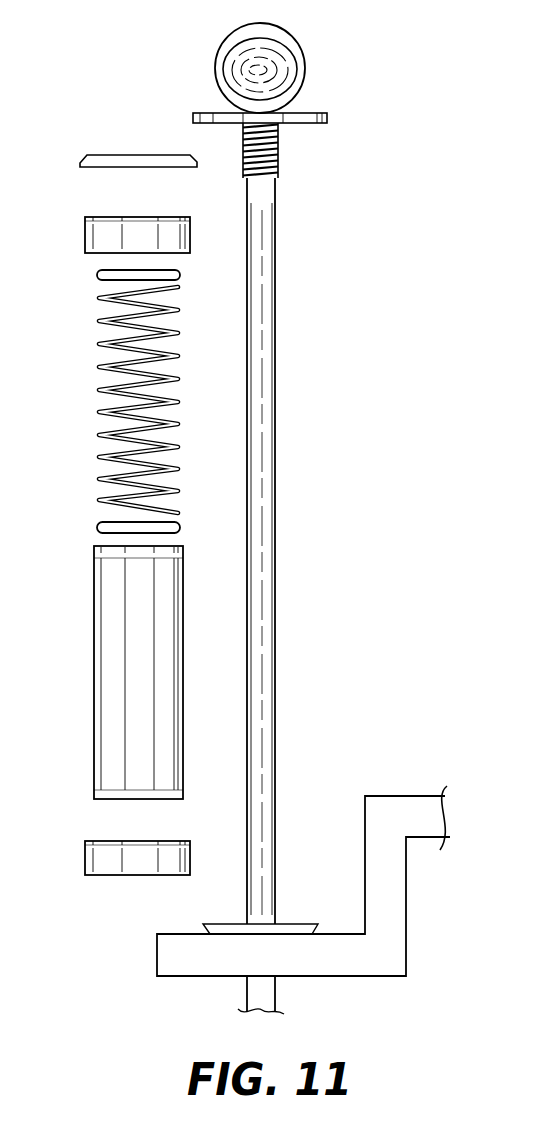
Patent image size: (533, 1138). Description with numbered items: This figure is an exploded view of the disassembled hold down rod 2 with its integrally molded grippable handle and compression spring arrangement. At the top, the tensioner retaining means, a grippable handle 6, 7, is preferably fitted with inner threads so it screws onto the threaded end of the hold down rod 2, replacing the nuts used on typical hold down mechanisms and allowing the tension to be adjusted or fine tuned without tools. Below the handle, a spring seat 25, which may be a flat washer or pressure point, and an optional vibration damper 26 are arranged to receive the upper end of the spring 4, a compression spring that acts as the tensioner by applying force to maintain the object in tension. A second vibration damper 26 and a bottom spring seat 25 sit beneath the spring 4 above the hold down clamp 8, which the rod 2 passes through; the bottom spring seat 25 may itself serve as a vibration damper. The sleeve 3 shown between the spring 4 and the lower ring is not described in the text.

The hold down rod 2 is at (276, 518).
The sleeve 3 is at (94, 670).
The spring 4 is at (98, 388).
The grippable handle 6 is at (284, 68).
The grippable handle 7 is at (260, 68).
The hold down clamp 8 is at (157, 956).
The spring seat 25 is at (86, 163).
The vibration damper 26 is at (89, 241).